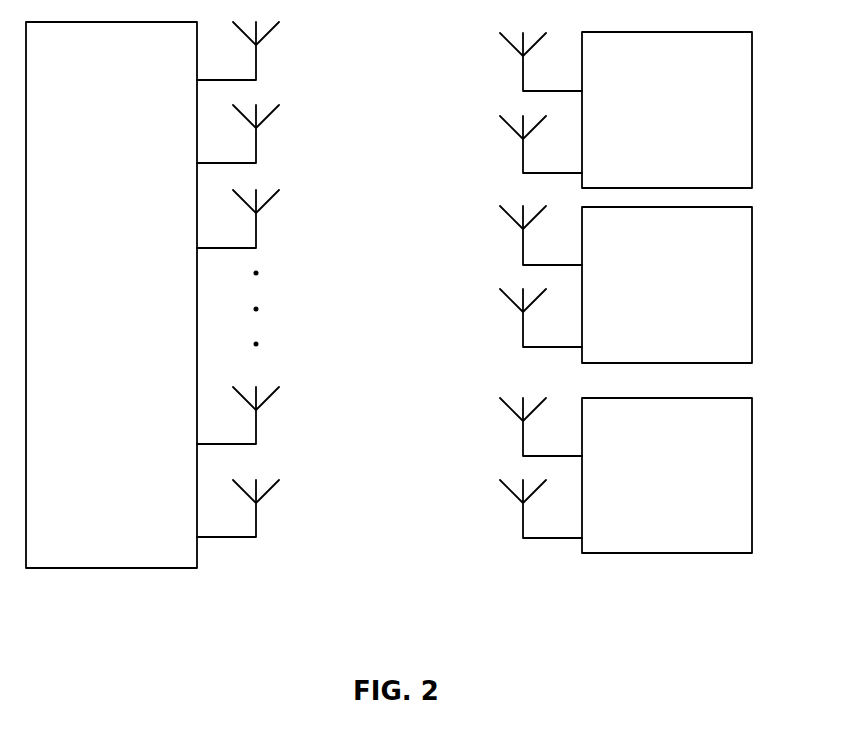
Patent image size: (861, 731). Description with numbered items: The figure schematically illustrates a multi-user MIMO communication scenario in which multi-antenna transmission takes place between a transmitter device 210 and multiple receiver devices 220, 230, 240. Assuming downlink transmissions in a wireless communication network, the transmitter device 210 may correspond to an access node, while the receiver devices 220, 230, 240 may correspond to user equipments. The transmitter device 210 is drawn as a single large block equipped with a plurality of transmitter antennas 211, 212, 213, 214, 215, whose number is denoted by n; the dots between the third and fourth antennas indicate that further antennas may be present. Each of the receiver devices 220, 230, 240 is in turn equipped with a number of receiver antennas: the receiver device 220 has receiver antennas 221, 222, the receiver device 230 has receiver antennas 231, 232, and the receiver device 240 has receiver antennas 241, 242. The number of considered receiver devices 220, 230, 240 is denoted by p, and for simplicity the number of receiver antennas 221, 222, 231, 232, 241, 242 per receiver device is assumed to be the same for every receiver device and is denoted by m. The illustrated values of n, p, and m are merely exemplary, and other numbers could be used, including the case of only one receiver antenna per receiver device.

The transmitter device 210 is at (113, 568).
The transmitter antenna 211 is at (256, 58).
The transmitter antenna 212 is at (256, 141).
The transmitter antenna 213 is at (256, 226).
The transmitter antenna 214 is at (256, 422).
The transmitter antenna 215 is at (256, 518).
The receiver device 220 is at (752, 105).
The receiver antenna 221 is at (523, 73).
The receiver antenna 222 is at (523, 153).
The receiver device 230 is at (752, 280).
The receiver antenna 231 is at (523, 244).
The receiver antenna 232 is at (523, 324).
The receiver device 240 is at (752, 470).
The receiver antenna 241 is at (523, 435).
The receiver antenna 242 is at (523, 514).